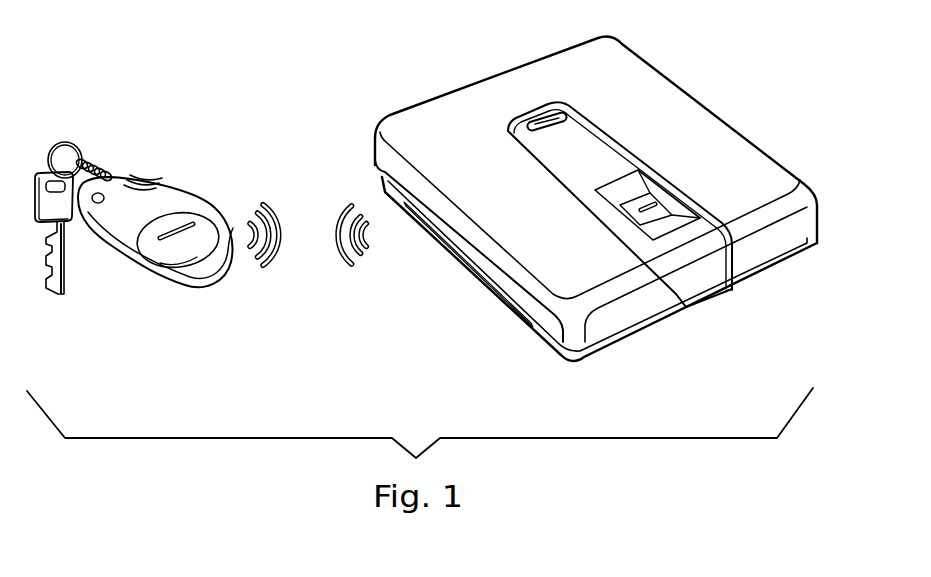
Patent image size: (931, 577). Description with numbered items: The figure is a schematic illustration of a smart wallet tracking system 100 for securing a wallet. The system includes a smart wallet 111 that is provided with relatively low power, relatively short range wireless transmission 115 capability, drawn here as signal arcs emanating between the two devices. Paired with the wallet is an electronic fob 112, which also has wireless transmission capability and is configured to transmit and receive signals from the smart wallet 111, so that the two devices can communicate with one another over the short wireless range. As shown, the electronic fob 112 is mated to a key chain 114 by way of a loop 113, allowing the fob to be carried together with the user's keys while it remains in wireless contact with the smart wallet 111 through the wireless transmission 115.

The smart wallet tracking system 100 is at (298, 62).
The smart wallet 111 is at (687, 92).
The electronic fob 112 is at (178, 284).
The loop 113 is at (108, 172).
The key chain 114 is at (65, 145).
The wireless transmission 115 is at (343, 258).